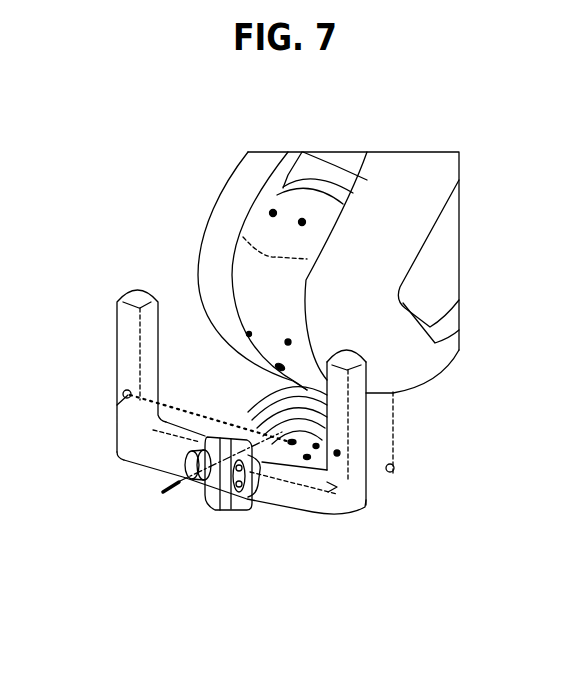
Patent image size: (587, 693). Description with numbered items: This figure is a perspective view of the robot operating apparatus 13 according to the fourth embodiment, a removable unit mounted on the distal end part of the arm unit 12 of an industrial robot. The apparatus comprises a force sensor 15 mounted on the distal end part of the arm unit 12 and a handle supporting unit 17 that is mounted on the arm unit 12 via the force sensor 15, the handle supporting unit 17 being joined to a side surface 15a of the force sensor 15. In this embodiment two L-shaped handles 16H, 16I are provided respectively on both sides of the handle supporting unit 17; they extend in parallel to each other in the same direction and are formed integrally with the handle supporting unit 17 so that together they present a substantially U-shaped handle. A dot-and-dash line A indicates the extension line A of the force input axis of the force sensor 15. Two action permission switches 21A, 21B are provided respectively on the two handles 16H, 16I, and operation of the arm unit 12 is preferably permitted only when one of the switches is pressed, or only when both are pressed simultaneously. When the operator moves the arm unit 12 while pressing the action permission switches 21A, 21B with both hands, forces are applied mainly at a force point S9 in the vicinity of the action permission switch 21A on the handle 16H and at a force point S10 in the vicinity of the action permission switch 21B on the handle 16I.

The arm unit 12 is at (225, 213).
The robot operating apparatus 13 is at (358, 532).
The force sensor 15 is at (320, 422).
The side surface 15a is at (320, 432).
The handle 16H is at (310, 500).
The handle 16I is at (140, 445).
The handle supporting unit 17 is at (247, 407).
The action permission switch 21A is at (352, 451).
The action permission switch 21B is at (127, 393).
The extension line of the force input axis A is at (177, 495).
The force point S9 is at (338, 456).
The force point S10 is at (117, 405).